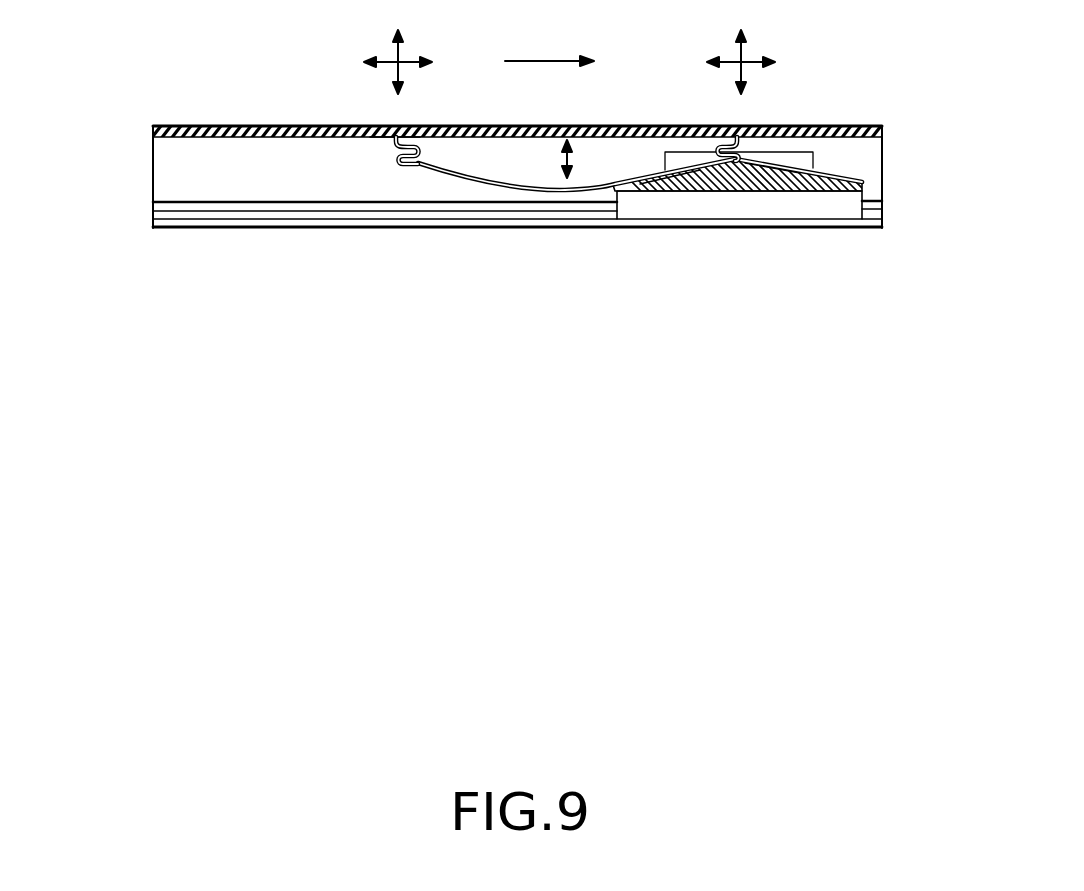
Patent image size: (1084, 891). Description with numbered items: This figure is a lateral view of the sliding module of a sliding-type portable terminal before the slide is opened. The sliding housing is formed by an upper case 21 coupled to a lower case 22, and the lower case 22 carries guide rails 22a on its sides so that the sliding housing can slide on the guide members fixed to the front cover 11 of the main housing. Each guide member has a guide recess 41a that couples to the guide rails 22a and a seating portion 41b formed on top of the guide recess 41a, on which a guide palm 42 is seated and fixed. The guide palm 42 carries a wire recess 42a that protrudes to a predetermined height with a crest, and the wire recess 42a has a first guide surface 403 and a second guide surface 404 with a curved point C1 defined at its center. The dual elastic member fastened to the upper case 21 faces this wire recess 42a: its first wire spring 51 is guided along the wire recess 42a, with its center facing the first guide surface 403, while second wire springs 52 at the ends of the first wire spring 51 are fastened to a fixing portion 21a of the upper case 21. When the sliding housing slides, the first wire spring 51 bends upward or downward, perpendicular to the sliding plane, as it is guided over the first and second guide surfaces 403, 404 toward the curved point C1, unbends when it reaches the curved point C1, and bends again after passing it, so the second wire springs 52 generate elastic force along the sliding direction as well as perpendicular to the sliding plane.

The front cover 11 is at (210, 228).
The upper case 21 is at (208, 126).
The fixing portion 21a is at (378, 126).
The lower case 22 is at (162, 170).
The guide rail 22a is at (204, 201).
The guide recess 41a is at (643, 203).
The seating portion 41b is at (812, 156).
The guide palm 42 is at (812, 187).
The wire recess 42a is at (848, 178).
The first guide surface 403 is at (700, 188).
The second guide surface 404 is at (758, 188).
The first wire spring 51 is at (565, 190).
The second wire spring 52 is at (393, 160).
The curved point C1 is at (767, 185).